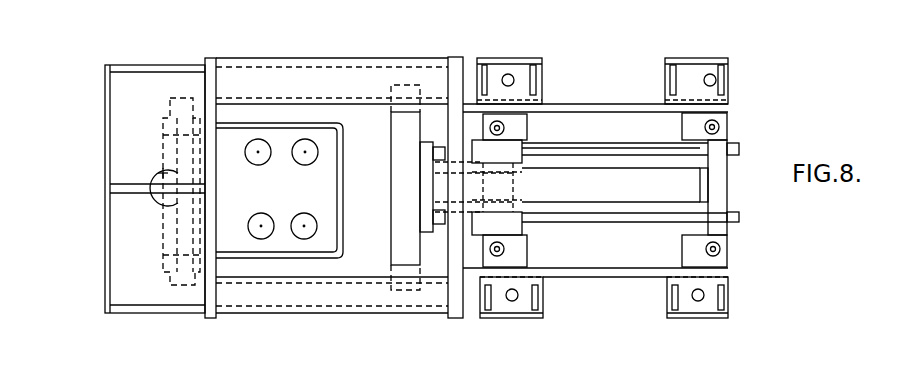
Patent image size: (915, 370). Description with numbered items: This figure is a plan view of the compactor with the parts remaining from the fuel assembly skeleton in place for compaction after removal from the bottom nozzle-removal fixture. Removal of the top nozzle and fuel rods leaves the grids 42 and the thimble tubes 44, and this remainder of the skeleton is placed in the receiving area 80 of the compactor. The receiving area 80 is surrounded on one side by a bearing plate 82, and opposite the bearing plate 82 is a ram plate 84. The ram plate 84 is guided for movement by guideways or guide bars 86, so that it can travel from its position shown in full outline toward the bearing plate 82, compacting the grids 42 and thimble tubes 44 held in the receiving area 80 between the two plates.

The grids 42 is at (328, 255).
The thimble tubes 44 is at (261, 220).
The receiving area 80 is at (370, 117).
The bearing plate 82 is at (208, 322).
The ram plate 84 is at (402, 176).
The guide bars 86 is at (283, 75).